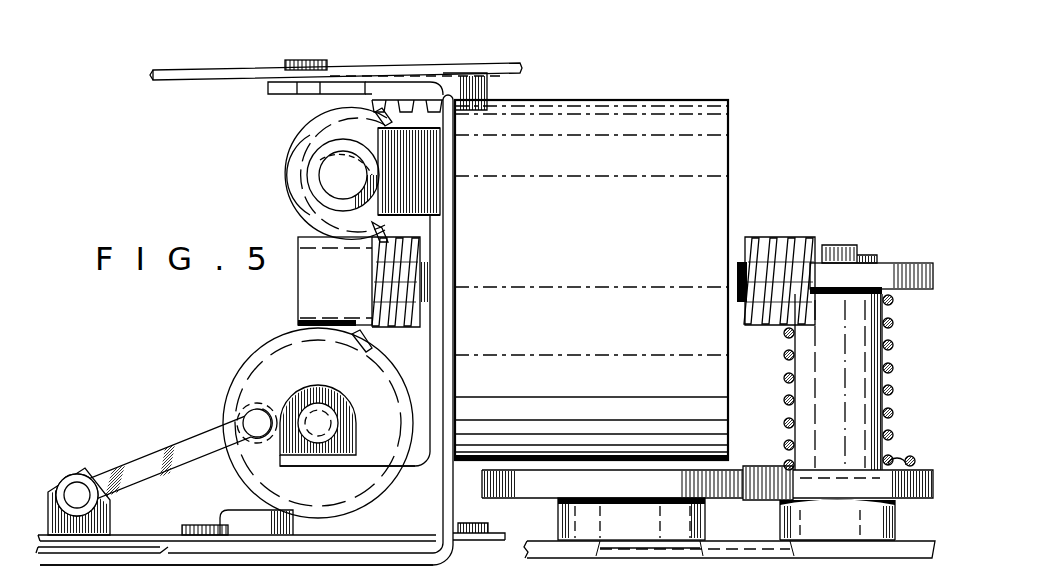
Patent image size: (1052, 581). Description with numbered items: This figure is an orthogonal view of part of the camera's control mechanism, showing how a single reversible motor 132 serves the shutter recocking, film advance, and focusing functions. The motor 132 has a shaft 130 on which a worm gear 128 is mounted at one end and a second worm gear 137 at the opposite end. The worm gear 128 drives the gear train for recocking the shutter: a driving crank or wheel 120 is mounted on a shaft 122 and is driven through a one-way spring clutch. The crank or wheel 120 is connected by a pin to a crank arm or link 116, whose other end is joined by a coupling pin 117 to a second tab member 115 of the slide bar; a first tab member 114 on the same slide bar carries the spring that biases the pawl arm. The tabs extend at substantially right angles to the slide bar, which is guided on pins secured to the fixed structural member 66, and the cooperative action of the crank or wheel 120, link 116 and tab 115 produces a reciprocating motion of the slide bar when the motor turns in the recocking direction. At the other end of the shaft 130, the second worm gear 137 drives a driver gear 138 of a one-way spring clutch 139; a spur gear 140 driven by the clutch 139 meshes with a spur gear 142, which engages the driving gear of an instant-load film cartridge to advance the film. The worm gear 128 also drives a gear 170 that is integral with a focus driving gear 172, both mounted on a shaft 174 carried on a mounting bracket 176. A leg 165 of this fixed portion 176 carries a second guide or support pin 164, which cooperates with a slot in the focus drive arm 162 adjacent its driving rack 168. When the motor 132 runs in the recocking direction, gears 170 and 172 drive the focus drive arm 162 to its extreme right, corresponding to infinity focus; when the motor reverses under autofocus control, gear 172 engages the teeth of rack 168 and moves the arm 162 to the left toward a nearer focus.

The fixed structural member 66 is at (447, 335).
The first tab member 114 is at (238, 519).
The second tab member 115 is at (50, 492).
The crank arm or link 116 is at (162, 445).
The coupling pin 117 is at (73, 473).
The driving crank or wheel 120 is at (240, 373).
The shaft 122 is at (308, 408).
The worm gear 128 is at (297, 298).
The shaft 130 is at (430, 270).
The reversible motor 132 is at (714, 160).
The second worm gear 137 is at (770, 234).
The driver gear 138 is at (898, 264).
The one-way spring clutch 139 is at (892, 347).
The spur gear 140 is at (935, 469).
The spur gear 142 is at (553, 488).
The focus drive arm 162 is at (217, 73).
The second guide or support pin 164 is at (310, 62).
The leg 165 is at (330, 88).
The driving rack 168 is at (489, 90).
The gear 170 is at (293, 138).
The focus driving gear 172 is at (283, 158).
The shaft 174 is at (336, 181).
The mounting bracket 176 is at (420, 167).